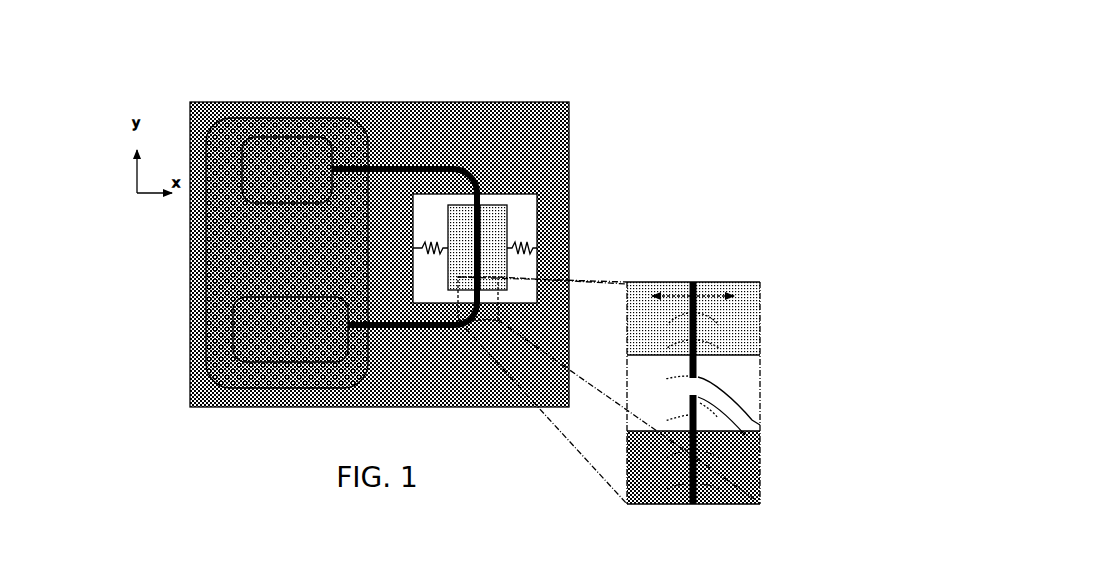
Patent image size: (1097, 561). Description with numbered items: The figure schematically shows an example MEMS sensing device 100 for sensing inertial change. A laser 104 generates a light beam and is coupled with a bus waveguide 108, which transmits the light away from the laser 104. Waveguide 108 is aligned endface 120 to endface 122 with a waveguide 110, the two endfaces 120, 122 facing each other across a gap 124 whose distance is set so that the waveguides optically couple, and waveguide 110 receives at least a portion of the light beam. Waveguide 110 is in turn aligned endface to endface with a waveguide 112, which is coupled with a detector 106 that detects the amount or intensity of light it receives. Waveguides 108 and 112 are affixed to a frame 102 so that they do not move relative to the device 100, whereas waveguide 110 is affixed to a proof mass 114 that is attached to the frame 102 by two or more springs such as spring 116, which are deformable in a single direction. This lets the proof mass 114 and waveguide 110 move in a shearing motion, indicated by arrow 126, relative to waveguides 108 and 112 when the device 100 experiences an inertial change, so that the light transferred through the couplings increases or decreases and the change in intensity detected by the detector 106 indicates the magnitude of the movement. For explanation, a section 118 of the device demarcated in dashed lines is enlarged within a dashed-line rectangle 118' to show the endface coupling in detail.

The MEMS sensing device 100 is at (662, 100).
The frame 102 is at (210, 408).
The laser arrangement 104 is at (232, 333).
The detector 106 is at (285, 137).
The waveguide 108 is at (420, 328).
The waveguide 110 is at (482, 222).
The waveguide 112 is at (397, 167).
The proof mass 114 is at (510, 215).
The spring 116 is at (536, 244).
The section 118 is at (609, 372).
The dashed-line rectangle 118' is at (682, 356).
The endface 120 is at (760, 438).
The endface 122 is at (760, 425).
The gap 124 is at (672, 391).
The arrow 126 is at (712, 282).